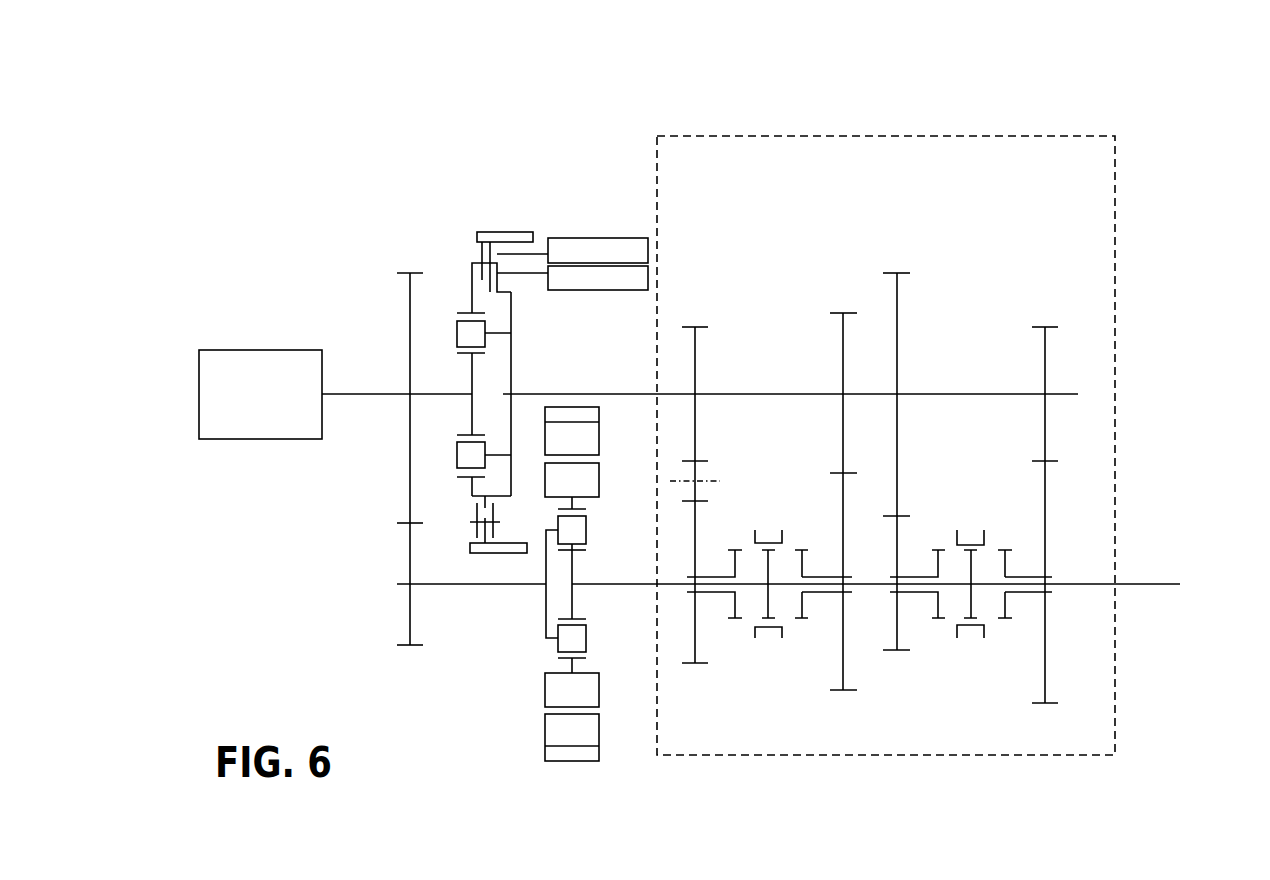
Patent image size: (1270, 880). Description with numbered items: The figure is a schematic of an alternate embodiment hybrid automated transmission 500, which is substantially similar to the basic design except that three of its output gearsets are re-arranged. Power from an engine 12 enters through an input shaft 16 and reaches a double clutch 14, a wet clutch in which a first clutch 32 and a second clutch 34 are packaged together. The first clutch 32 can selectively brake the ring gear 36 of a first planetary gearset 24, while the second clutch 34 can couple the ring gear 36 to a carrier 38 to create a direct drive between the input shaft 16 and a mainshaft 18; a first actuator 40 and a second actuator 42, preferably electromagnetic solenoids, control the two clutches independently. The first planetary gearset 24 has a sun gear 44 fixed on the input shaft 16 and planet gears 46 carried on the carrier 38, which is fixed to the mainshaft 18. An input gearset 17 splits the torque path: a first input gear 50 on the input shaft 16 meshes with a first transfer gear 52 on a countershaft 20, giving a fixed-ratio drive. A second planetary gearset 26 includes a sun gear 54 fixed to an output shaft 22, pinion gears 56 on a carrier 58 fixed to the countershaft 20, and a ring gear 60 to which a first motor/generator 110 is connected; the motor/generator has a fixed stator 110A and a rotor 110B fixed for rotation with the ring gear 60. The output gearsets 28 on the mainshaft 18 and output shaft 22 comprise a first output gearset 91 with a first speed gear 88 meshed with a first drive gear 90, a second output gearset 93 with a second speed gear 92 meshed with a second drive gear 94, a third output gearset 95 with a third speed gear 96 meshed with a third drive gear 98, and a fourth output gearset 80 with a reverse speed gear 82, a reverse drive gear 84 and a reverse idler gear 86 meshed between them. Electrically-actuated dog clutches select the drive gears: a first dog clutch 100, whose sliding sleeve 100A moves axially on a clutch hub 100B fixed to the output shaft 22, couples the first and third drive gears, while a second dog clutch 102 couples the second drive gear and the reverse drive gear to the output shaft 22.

The engine 12 is at (243, 350).
The double clutch 14 is at (494, 227).
The input shaft 16 is at (357, 394).
The input gearset 17 is at (390, 300).
The mainshaft 18 is at (598, 394).
The countershaft 20 is at (440, 585).
The output shaft 22 is at (1155, 584).
The first planetary gearset 24 is at (462, 278).
The second planetary gearset 26 is at (533, 641).
The output gearsets 28 is at (1094, 360).
The first clutch 32 is at (482, 257).
The second clutch 34 is at (497, 283).
The ring gear 36 is at (468, 292).
The carrier 38 is at (512, 357).
The first actuator 40 is at (590, 238).
The second actuator 42 is at (613, 290).
The sun gear 44 is at (465, 355).
The planet gears 46 is at (468, 330).
The first input gear 50 is at (410, 452).
The first transfer gear 52 is at (410, 612).
The sun gear 54 is at (573, 572).
The pinion gears 56 is at (575, 528).
The carrier 58 is at (545, 567).
The ring gear 60 is at (587, 658).
The fourth output gearset 80 is at (713, 308).
The reverse speed gear 82 is at (695, 365).
The reverse drive gear 84 is at (695, 537).
The reverse idler gear 86 is at (703, 470).
The first speed gear 88 is at (1045, 358).
The first drive gear 90 is at (1043, 482).
The first output gearset 91 is at (1024, 315).
The second speed gear 92 is at (897, 357).
The second output gearset 93 is at (899, 265).
The second drive gear 94 is at (897, 547).
The third output gearset 95 is at (825, 300).
The third speed gear 96 is at (843, 357).
The third drive gear 98 is at (843, 523).
The first dog clutch 100 is at (999, 637).
The sliding sleeve 100A is at (1017, 505).
The clutch hub 100B is at (972, 600).
The second dog clutch 102 is at (790, 635).
The first motor/generator 110 is at (535, 726).
The fixed stator 110A is at (550, 735).
The rotor 110B is at (552, 688).
The transmission 500 is at (1162, 98).